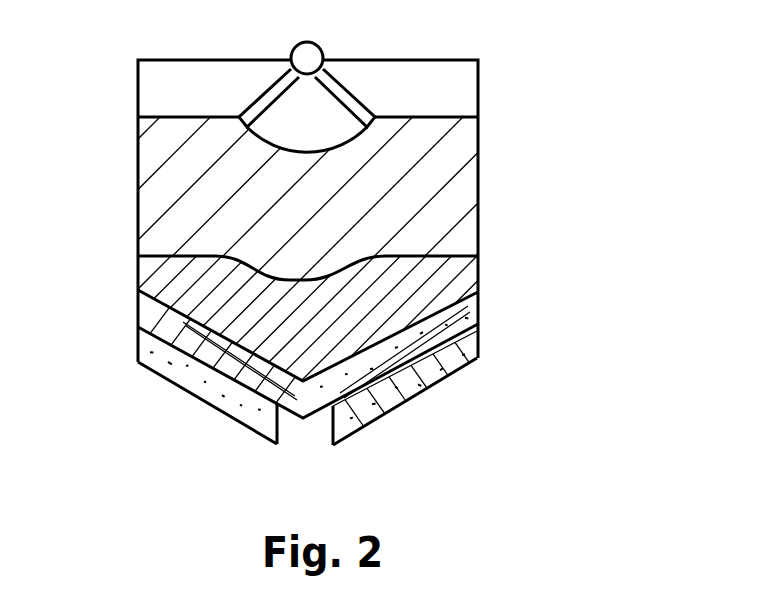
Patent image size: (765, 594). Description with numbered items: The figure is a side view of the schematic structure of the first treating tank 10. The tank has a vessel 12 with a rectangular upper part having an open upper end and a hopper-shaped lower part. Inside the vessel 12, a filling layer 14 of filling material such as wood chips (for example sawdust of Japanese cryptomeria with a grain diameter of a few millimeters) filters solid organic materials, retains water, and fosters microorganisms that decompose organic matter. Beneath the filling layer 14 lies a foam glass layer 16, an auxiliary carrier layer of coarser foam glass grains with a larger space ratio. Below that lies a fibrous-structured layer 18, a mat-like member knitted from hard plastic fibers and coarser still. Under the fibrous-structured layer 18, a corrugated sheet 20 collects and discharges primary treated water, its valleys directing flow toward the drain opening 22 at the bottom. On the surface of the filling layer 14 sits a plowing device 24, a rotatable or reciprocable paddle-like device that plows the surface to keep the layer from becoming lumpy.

The first treating tank 10 is at (511, 104).
The vessel 12 is at (479, 178).
The filling layer 14 is at (187, 210).
The foam glass layer 16 is at (450, 278).
The fibrous-structured layer 18 is at (460, 307).
The corrugated sheet 20 is at (477, 340).
The drain opening 22 is at (278, 445).
The plowing device 24 is at (347, 78).